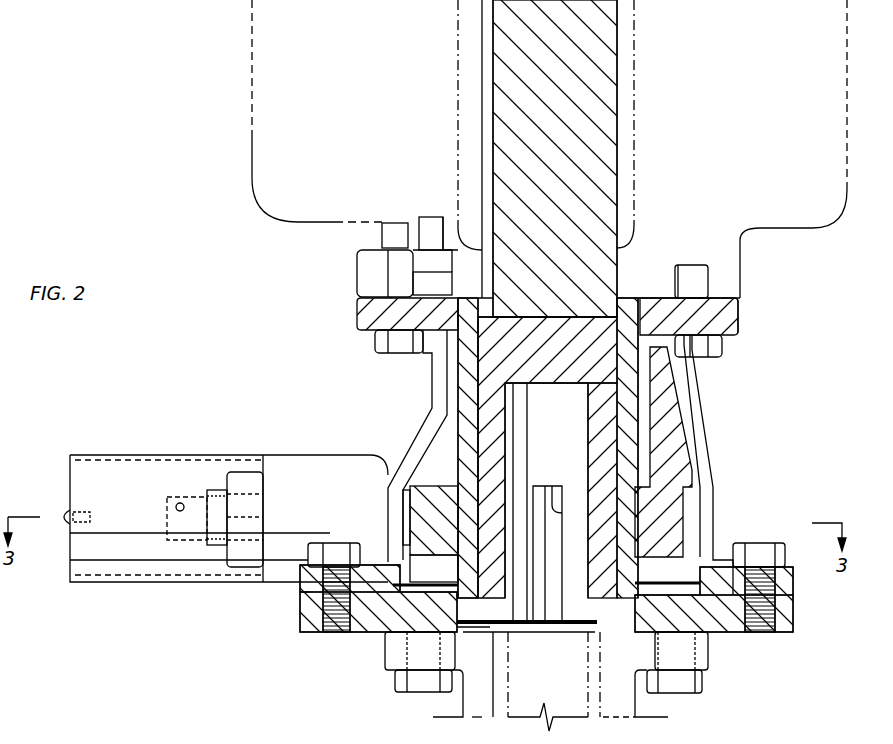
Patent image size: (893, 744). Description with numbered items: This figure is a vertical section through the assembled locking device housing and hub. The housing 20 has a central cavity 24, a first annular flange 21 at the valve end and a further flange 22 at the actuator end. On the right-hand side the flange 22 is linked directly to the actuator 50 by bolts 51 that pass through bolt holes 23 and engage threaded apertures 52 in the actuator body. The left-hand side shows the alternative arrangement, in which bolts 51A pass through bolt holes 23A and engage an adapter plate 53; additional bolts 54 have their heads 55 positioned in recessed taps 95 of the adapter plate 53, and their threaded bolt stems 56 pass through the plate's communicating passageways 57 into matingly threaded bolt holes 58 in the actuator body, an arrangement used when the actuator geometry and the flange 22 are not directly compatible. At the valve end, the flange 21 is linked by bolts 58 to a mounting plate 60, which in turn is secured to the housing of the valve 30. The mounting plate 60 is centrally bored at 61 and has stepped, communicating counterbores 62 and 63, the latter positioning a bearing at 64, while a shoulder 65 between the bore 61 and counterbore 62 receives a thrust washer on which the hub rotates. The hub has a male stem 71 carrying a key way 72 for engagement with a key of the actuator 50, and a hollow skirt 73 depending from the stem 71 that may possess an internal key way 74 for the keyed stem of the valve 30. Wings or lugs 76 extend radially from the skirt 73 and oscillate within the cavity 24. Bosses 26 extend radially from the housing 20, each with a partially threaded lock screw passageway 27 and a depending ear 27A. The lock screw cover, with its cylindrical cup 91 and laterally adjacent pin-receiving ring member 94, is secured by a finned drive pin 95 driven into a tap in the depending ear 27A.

The housing 20 is at (408, 408).
The first annular flange 21 is at (310, 590).
The further flange 22 is at (742, 320).
The bolt holes 23 is at (713, 312).
The bolt holes 23A is at (358, 317).
The central cavity 24 is at (655, 465).
The bosses 26 is at (403, 707).
The lock screw passageway 27 is at (417, 688).
The depending ear 27A is at (380, 688).
The valve 30 is at (620, 705).
The actuator 50 is at (252, 70).
The bolts 51 is at (722, 350).
The bolts 51A is at (377, 344).
The threaded apertures 52 is at (675, 285).
The adapter plate 53 is at (358, 272).
The additional bolts 54 is at (430, 228).
The bolt heads 55 is at (372, 250).
The threaded bolt stems 56 is at (440, 228).
The communicating passageways 57 is at (405, 248).
The threaded bolt holes / bolts 58 is at (418, 227).
The mounting plate 60 is at (790, 618).
The central bore 61 is at (588, 630).
The counterbore 62 is at (646, 630).
The counterbore 63 is at (457, 597).
The bearing location 64 is at (638, 570).
The shoulder 65 is at (470, 628).
The stem 71 is at (618, 62).
The key way 72 is at (482, 52).
The hollow skirt 73 is at (456, 432).
The internal key way 74 is at (550, 486).
The wings or lugs 76 is at (434, 486).
The cylindrical cup 91 is at (170, 453).
The ring member 94 is at (280, 668).
The drive pin / recessed taps 95 is at (395, 282).